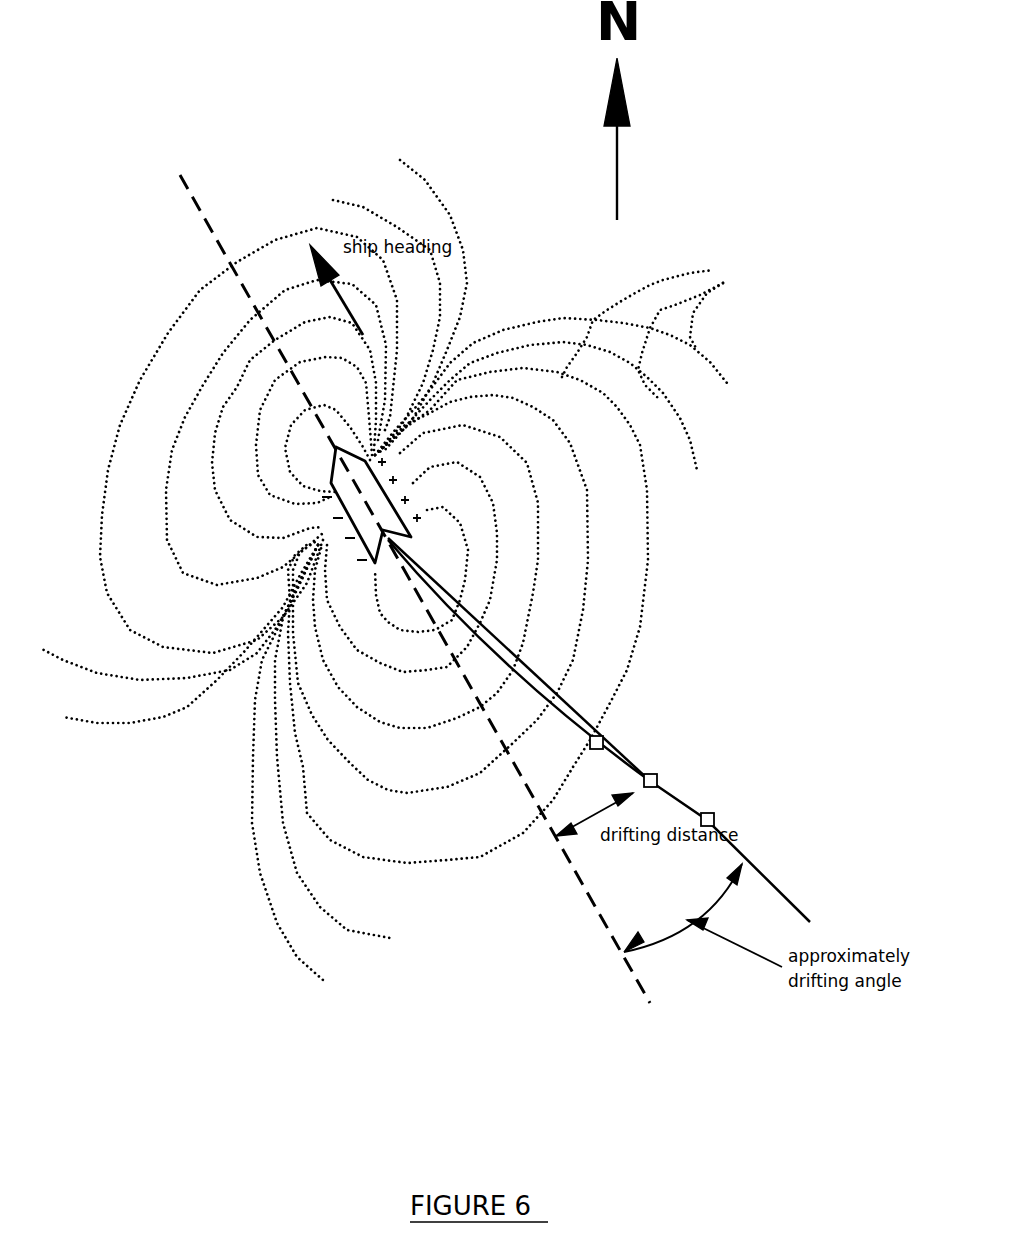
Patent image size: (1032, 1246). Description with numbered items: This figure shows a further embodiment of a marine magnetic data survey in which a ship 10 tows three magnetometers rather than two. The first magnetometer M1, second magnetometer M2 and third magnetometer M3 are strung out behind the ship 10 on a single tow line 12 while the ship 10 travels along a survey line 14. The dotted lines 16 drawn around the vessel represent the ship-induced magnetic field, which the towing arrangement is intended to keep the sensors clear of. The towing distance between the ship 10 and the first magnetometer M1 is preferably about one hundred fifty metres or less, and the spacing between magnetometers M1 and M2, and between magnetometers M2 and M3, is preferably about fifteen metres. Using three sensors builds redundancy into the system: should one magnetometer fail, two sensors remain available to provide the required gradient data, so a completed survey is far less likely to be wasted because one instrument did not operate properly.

The ship 10 is at (357, 483).
The tow line 12 is at (523, 685).
The survey line 14 is at (534, 797).
The ship-induced magnetic field lines 16 is at (396, 570).
The first magnetometer M1 is at (597, 727).
The second magnetometer M2 is at (657, 780).
The third magnetometer M3 is at (717, 820).